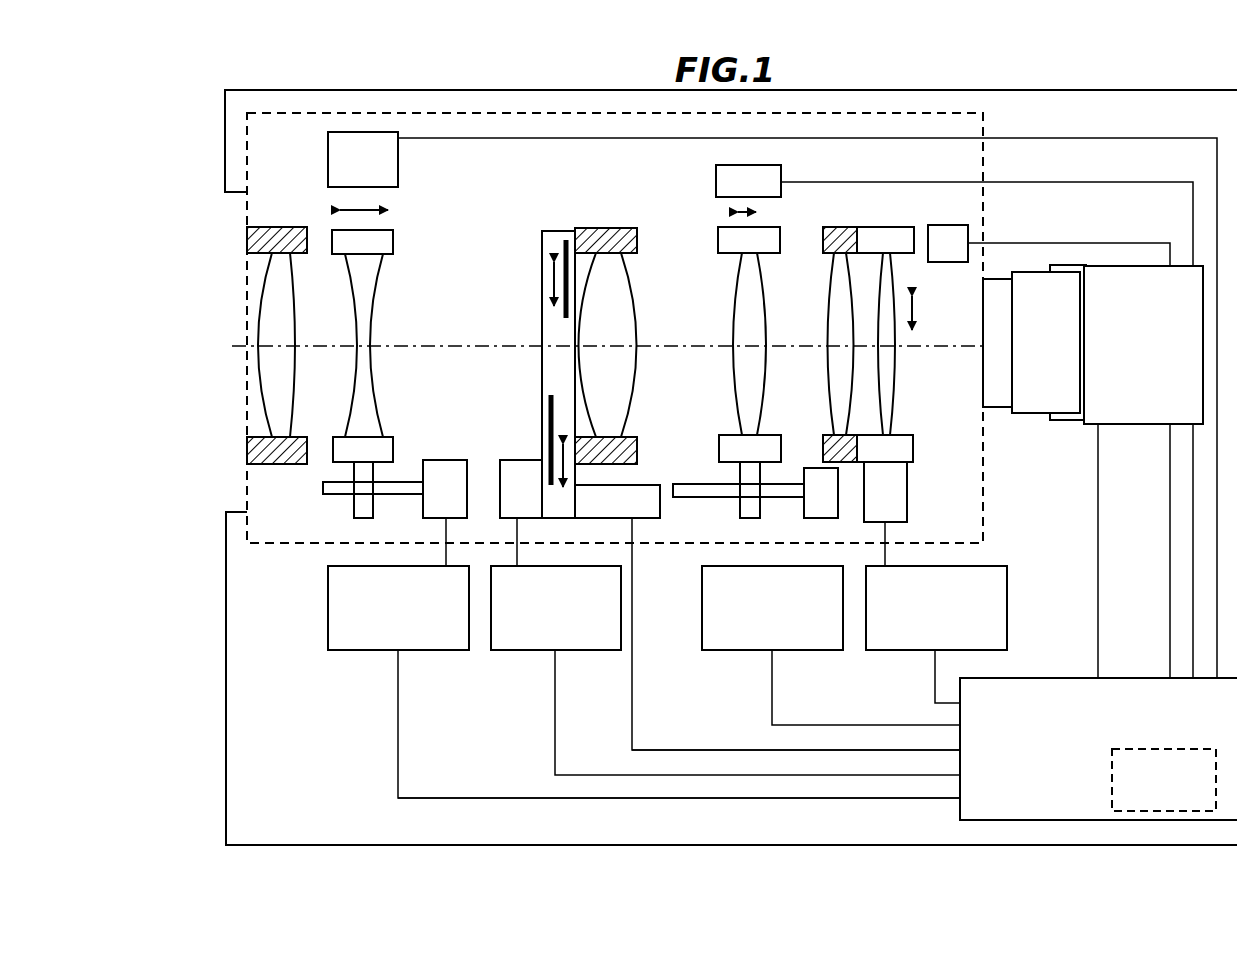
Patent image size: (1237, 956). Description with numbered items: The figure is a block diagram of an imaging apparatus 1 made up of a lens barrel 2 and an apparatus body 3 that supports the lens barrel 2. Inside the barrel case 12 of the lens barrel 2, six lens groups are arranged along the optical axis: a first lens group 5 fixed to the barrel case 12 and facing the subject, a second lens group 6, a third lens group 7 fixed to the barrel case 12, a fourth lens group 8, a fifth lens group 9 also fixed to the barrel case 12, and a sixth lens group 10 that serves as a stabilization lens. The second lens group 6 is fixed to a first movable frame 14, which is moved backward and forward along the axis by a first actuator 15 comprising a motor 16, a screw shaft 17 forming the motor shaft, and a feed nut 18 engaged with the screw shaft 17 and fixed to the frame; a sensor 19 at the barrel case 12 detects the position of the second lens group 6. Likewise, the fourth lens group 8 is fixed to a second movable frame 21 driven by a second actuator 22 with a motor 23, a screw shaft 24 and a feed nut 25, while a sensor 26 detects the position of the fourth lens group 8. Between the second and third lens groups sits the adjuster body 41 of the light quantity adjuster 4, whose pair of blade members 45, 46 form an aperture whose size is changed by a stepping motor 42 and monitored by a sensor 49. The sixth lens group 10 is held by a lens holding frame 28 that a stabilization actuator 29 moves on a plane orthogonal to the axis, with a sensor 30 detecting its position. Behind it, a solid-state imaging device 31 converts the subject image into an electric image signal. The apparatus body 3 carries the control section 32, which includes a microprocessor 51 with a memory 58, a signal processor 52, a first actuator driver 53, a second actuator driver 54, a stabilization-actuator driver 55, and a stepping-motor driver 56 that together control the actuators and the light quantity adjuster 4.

The imaging apparatus 1 is at (187, 120).
The lens barrel 2 is at (267, 345).
The apparatus body 3 is at (226, 628).
The light quantity adjuster 4 is at (533, 368).
The first lens group 5 is at (290, 307).
The second lens group 6 is at (372, 286).
The third lens group 7 is at (633, 305).
The fourth lens group 8 is at (757, 302).
The fifth lens group 9 is at (834, 388).
The sixth lens group 10 is at (896, 370).
The barrel case 12 is at (247, 483).
The first movable frame 14 is at (395, 241).
The first actuator 15 is at (392, 474).
The motor 16 is at (451, 460).
The screw shaft 17 is at (400, 497).
The feed nut 18 is at (353, 510).
The sensor 19 is at (400, 178).
The second movable frame 21 is at (718, 243).
The second actuator 22 is at (760, 494).
The motor 23 is at (880, 544).
The screw shaft 24 is at (742, 454).
The feed nut 25 is at (857, 513).
The sensor 26 is at (716, 182).
The lens holding frame 28 is at (913, 450).
The stabilization actuator 29 is at (907, 505).
The sensor 30 is at (950, 225).
The solid-state imaging device 31 is at (1002, 425).
The control section 32 is at (372, 775).
The adjuster body 41 is at (542, 242).
The stepping motor 42 is at (528, 460).
The blade member 45 is at (563, 318).
The blade member 46 is at (549, 410).
The sensor 49 is at (700, 485).
The microprocessor 51 is at (1057, 678).
The signal processor 52 is at (1117, 425).
The first actuator driver 53 is at (345, 652).
The second actuator driver 54 is at (728, 652).
The stabilization-actuator driver 55 is at (890, 652).
The stepping-motor driver 56 is at (512, 652).
The memory 58 is at (1112, 759).